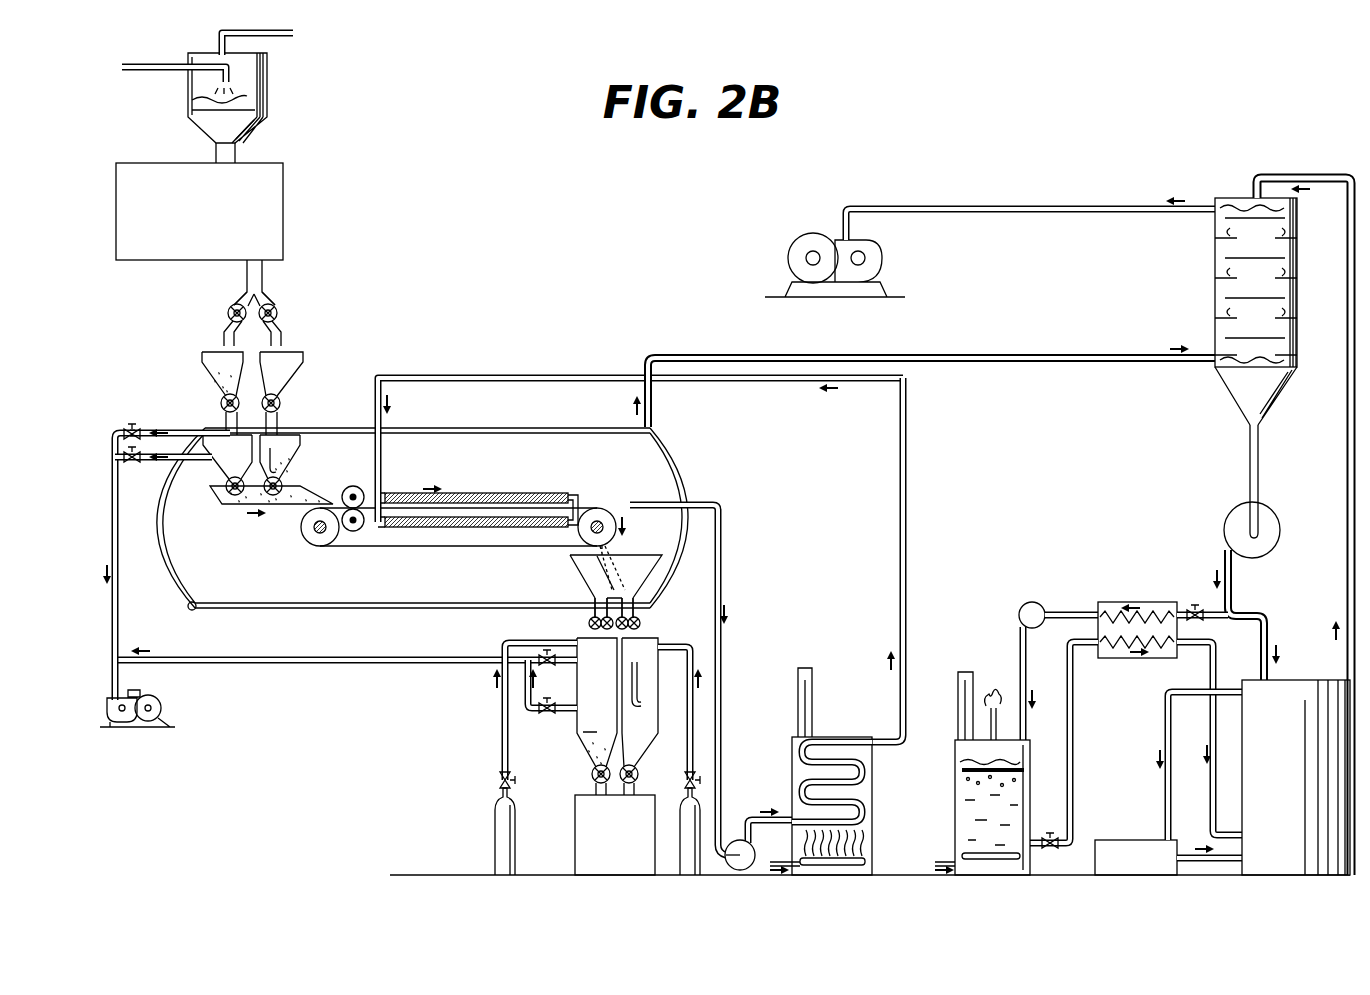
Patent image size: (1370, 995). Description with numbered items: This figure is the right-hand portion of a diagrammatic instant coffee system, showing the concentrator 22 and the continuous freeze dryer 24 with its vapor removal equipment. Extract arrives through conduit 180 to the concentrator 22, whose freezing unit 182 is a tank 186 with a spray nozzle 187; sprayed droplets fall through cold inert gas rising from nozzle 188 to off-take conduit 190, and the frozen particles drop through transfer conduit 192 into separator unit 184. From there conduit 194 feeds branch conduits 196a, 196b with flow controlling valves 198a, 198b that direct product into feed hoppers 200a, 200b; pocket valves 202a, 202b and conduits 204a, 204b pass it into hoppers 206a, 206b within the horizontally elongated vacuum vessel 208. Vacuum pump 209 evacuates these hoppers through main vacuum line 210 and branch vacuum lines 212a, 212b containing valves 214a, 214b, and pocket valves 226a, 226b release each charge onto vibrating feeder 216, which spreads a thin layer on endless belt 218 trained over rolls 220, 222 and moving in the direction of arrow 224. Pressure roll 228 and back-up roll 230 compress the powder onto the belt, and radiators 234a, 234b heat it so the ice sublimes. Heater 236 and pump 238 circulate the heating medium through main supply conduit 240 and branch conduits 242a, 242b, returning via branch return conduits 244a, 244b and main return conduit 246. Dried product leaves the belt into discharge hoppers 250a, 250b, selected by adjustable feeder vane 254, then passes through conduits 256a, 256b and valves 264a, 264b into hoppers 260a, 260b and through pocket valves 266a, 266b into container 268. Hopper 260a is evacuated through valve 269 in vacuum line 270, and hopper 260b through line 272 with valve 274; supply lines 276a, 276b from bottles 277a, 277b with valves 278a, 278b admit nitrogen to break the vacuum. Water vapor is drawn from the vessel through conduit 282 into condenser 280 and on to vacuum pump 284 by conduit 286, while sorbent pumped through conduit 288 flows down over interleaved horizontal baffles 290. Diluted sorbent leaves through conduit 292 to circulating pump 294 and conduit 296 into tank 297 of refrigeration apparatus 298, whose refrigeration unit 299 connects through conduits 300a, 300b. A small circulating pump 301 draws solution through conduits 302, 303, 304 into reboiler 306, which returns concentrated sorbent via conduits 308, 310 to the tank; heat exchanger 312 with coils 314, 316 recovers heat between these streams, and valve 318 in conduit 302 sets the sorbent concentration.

The concentrator 22 is at (227, 146).
The continuous freeze dryer 24 is at (692, 461).
The conduit 180 is at (170, 64).
The freezing unit 182 is at (235, 88).
The separator unit 184 is at (283, 198).
The tank 186 is at (190, 103).
The spray nozzle 187 is at (258, 90).
The nozzle 188 is at (254, 124).
The off-take conduit 190 is at (272, 83).
The transfer conduit 192 is at (216, 156).
The conduit 194 is at (263, 266).
The branch conduit 196a is at (242, 292).
The branch conduit 196b is at (275, 298).
The flow controlling valve 198a is at (228, 315).
The flow controlling valve 198b is at (278, 316).
The feed hopper 200a is at (202, 357).
The feed hopper 200b is at (303, 357).
The pocket valve 202a is at (221, 403).
The pocket valve 202b is at (281, 403).
The conduit 204a is at (225, 426).
The conduit 204b is at (280, 426).
The hopper 206a is at (215, 456).
The hopper 206b is at (300, 441).
The vacuum vessel 208 is at (557, 426).
The vacuum pump 209 is at (161, 700).
The main vacuum line 210 is at (120, 606).
The branch vacuum line 212a is at (175, 428).
The branch vacuum line 212b is at (175, 470).
The valve 214a is at (128, 428).
The valve 214b is at (131, 464).
The vibrating feeder 216 is at (225, 507).
The endless belt 218 is at (330, 546).
The roll 220 is at (301, 528).
The roll 222 is at (604, 512).
The arrow 224 is at (435, 485).
The pocket valve 226a is at (226, 489).
The pocket valve 226b is at (282, 485).
The pressure roll 228 is at (354, 486).
The back-up roll 230 is at (353, 532).
The radiator 234a is at (492, 493).
The radiator 234b is at (460, 527).
The heater 236 is at (839, 738).
The pump 238 is at (735, 843).
The main supply conduit 240 is at (907, 506).
The branch conduit 242a is at (386, 492).
The branch conduit 242b is at (379, 528).
The branch return conduit 244a is at (575, 494).
The branch return conduit 244b is at (572, 525).
The main return conduit 246 is at (721, 634).
The discharge hopper 250a is at (572, 560).
The discharge hopper 250b is at (651, 556).
The adjustable feeder vane 254 is at (604, 572).
The conduit 256a is at (595, 609).
The conduit 256b is at (635, 609).
The hopper 260a is at (585, 740).
The hopper 260b is at (648, 746).
The valve 264a is at (590, 626).
The valve 264b is at (640, 626).
The pocket valve 266a is at (592, 776).
The pocket valve 266b is at (637, 776).
The container 268 is at (599, 848).
The valve 269 is at (540, 658).
The vacuum line 270 is at (412, 658).
The line 272 is at (636, 707).
The valve 274 is at (540, 714).
The supply line 276a is at (503, 706).
The supply line 276b is at (693, 721).
The bottle 277a is at (495, 809).
The bottle 277b is at (700, 871).
The valve 278a is at (499, 778).
The valve 278b is at (700, 781).
The condenser 280 is at (1253, 311).
The conduit 282 is at (1020, 353).
The vacuum pump 284 is at (882, 263).
The conduit 286 is at (985, 215).
The conduit 288 is at (1346, 420).
The interleaved horizontal baffles 290 is at (1283, 276).
The conduit 292 is at (1250, 449).
The circulating pump 294 is at (1236, 569).
The conduit 296 is at (1233, 577).
The tank 297 is at (1267, 723).
The refrigeration apparatus 298 is at (1163, 778).
The refrigeration unit 299 is at (1125, 838).
The conduit 300a is at (1166, 806).
The conduit 300b is at (1183, 854).
The circulating pump 301 is at (1022, 606).
The conduit 302 is at (1182, 608).
The conduit 303 is at (1058, 610).
The conduit 304 is at (1020, 633).
The reboiler 306 is at (955, 749).
The conduit 308 is at (1068, 735).
The conduit 310 is at (1190, 646).
The heat exchanger 312 is at (1117, 621).
The coil 314 is at (1100, 612).
The coil 316 is at (1106, 651).
The valve 318 is at (1195, 602).